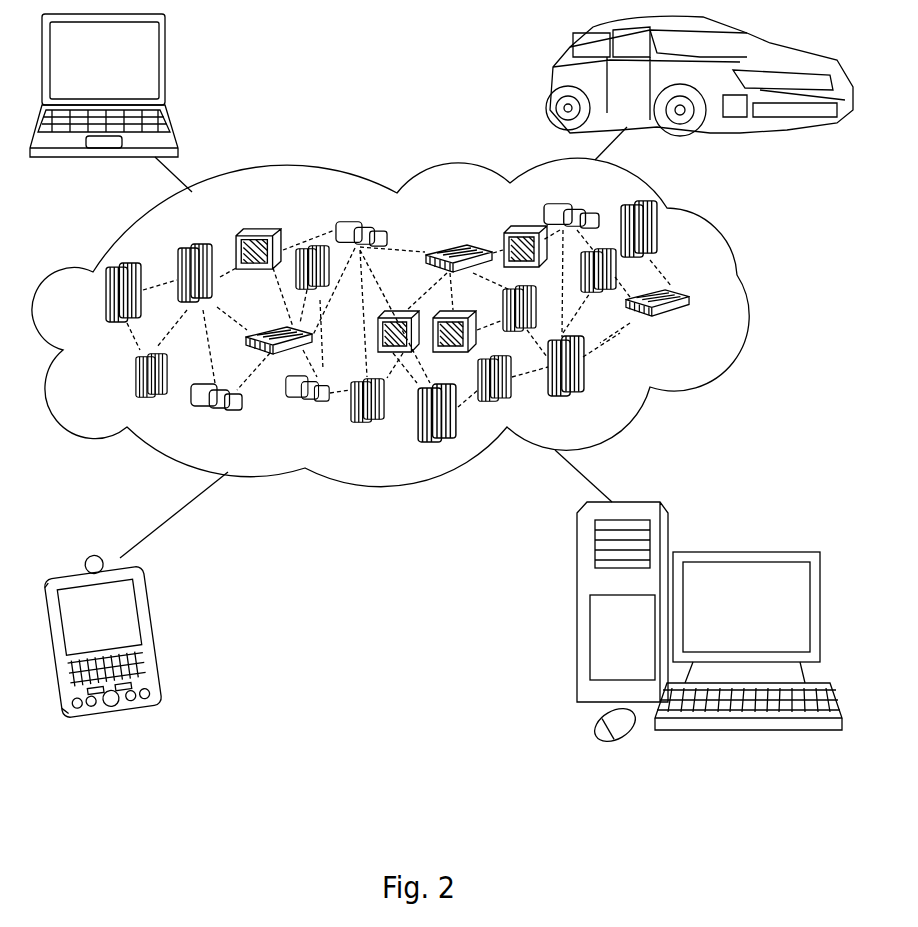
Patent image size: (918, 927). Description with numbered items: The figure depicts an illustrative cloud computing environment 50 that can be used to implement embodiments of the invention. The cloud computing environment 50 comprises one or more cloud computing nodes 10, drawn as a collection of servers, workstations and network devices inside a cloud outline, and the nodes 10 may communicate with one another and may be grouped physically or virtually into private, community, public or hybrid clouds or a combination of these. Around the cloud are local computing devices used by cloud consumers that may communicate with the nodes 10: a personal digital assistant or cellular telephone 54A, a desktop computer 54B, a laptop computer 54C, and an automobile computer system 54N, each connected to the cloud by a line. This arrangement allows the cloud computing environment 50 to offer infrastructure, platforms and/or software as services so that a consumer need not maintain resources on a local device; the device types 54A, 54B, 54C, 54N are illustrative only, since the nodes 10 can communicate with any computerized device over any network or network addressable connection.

The cloud computing node 10 is at (693, 331).
The cloud computing environment 50 is at (745, 305).
The personal digital assistant or cellular telephone 54A is at (155, 632).
The desktop computer 54B is at (742, 550).
The laptop computer 54C is at (167, 67).
The automobile computer system 54N is at (550, 80).